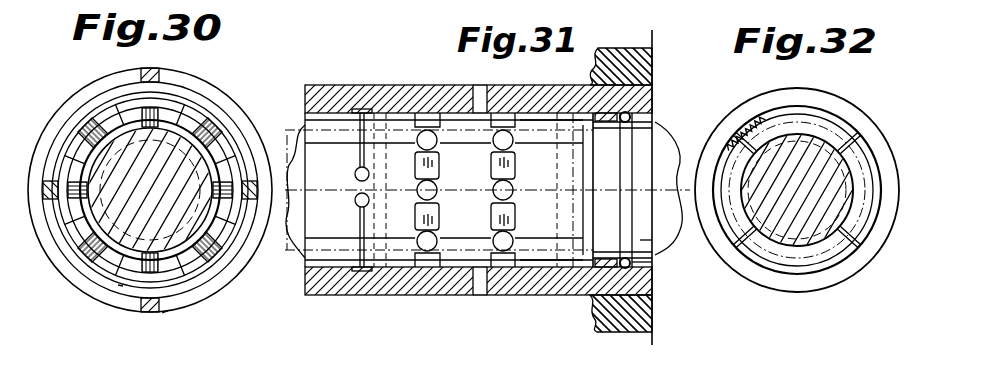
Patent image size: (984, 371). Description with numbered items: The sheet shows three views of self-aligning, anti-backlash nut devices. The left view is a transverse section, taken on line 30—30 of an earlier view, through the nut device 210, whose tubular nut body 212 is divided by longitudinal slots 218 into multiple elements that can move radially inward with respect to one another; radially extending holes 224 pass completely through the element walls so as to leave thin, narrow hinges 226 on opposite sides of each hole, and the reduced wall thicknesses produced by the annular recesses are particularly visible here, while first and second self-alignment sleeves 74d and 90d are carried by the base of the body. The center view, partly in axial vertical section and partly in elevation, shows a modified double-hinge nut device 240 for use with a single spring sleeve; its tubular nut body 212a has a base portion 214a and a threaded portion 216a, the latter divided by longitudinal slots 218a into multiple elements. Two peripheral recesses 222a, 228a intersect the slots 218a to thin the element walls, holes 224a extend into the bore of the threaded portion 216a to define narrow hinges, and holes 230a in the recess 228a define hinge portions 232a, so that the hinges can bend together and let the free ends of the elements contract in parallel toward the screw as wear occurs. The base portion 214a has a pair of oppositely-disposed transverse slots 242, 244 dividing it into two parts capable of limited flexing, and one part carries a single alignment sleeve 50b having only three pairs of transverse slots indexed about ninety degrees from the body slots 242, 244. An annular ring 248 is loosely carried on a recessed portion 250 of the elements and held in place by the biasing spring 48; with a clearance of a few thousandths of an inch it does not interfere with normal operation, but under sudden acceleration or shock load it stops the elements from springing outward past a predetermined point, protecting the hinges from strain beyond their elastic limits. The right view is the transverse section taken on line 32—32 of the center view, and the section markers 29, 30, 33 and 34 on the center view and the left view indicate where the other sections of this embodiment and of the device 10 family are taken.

In FIG. 30, the self-aligning, anti-backlash nut device 210 is at (67, 289).
In FIG. 30, the tubular nut body 212 is at (85, 233).
In FIG. 31, the tubular nut body 212a is at (303, 262).
In FIG. 31, the base portion 214a is at (350, 172).
In FIG. 31, the threaded portion 216a is at (537, 295).
In FIG. 32, the threaded portion 216a is at (790, 257).
In FIG. 30, the longitudinal slots 218 is at (125, 228).
In FIG. 31, the longitudinal slots 218a is at (543, 240).
In FIG. 32, the longitudinal slots 218a is at (755, 120).
In FIG. 30, the peripheral recess 222a is at (187, 160).
In FIG. 31, the peripheral recess 222a is at (417, 163).
In FIG. 30, the radially extending holes 224 is at (87, 157).
In FIG. 31, the holes 224a is at (424, 232).
In FIG. 30, the hinges 226 is at (108, 137).
In FIG. 31, the annular recess 228a is at (540, 163).
In FIG. 31, the holes 230a is at (496, 131).
In FIG. 31, the hinge portions 232a is at (492, 153).
In FIG. 31, the nut device 240 is at (561, 302).
In FIG. 32, the nut device 240 is at (843, 294).
In FIG. 31, the transverse slot 242 is at (356, 143).
In FIG. 31, the transverse slot 244 is at (365, 227).
In FIG. 31, the annular ring 248 is at (604, 268).
In FIG. 31, the recessed portion 250 is at (605, 157).
In FIG. 31, the biasing spring 48 is at (637, 267).
In FIG. 32, the biasing spring 48 is at (775, 103).
In FIG. 31, the alignment sleeve 50b is at (647, 93).
In FIG. 32, the alignment sleeve 50b is at (863, 123).
In FIG. 31, the apparatus 10 is at (648, 240).
In FIG. 32, the apparatus 10 is at (803, 227).
In FIG. 30, the first self-alignment sleeve 74d is at (123, 286).
In FIG. 30, the second self-alignment sleeve 90d is at (162, 313).
In FIG. 31, the section line 29 is at (472, 5).
In FIG. 31, the section line 30— 30 is at (372, 5).
In FIG. 31, the section line 32— 32 is at (657, 28).
In FIG. 31, the section line 33 is at (425, 45).
In FIG. 31, the section line 34 is at (362, 45).